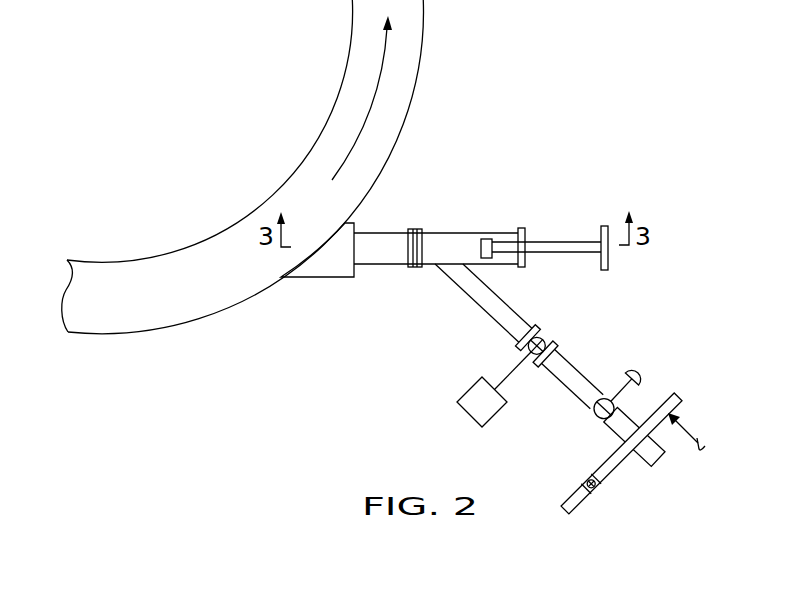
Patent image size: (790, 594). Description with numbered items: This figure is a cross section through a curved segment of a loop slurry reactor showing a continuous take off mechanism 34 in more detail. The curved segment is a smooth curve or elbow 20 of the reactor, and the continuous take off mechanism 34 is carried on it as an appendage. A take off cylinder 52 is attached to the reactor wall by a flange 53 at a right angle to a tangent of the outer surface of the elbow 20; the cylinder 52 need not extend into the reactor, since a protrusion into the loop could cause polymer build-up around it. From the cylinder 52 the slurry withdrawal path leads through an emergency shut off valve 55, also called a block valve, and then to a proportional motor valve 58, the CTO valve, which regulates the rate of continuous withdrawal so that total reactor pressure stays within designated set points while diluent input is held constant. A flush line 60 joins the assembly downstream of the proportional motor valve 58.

The elbow 20 is at (272, 167).
The take off cylinder 52 is at (481, 227).
The flange 53 is at (322, 277).
The continuous take off mechanism 34 is at (421, 286).
The emergency shut off valve 55 is at (494, 389).
The proportional motor valve 58 is at (645, 369).
The flush line 60 is at (621, 463).